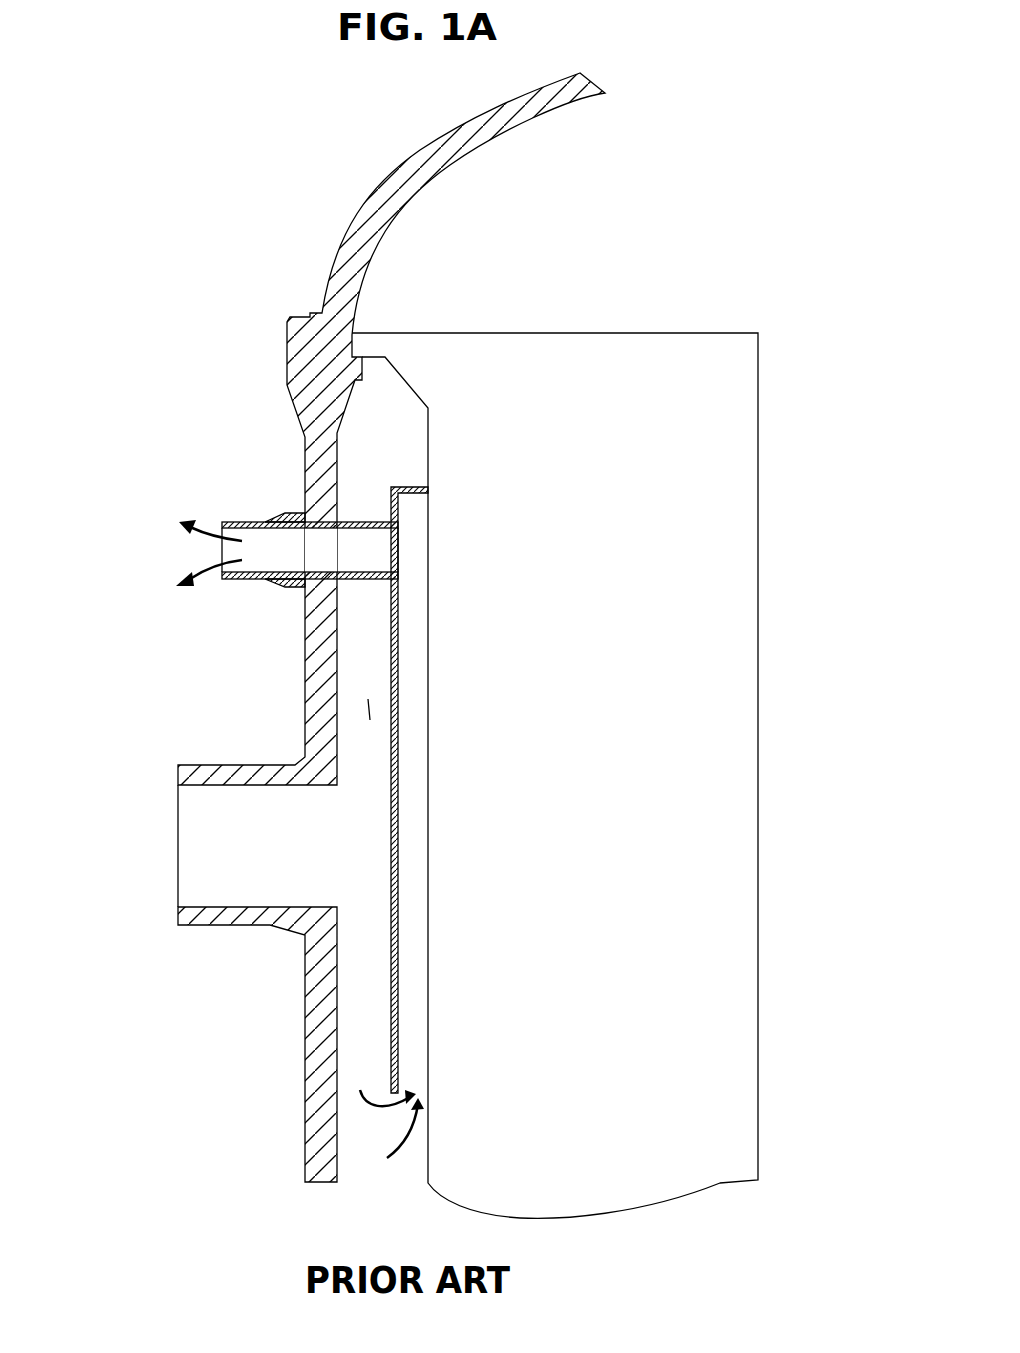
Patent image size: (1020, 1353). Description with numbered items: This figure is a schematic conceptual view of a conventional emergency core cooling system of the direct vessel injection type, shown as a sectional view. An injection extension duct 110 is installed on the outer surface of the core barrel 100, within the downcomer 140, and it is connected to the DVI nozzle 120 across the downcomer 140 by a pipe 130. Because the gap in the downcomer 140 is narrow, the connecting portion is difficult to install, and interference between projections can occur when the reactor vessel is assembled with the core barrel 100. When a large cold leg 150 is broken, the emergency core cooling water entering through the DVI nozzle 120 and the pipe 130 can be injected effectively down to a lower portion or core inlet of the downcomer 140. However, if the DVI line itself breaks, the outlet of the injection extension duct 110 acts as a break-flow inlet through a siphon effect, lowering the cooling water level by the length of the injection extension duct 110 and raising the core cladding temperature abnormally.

The core barrel 100 is at (426, 437).
The injection extension duct 110 is at (390, 648).
The DVI nozzle 120 is at (237, 517).
The pipe 130 is at (357, 521).
The downcomer 140 is at (367, 708).
The cold leg 150 is at (197, 917).